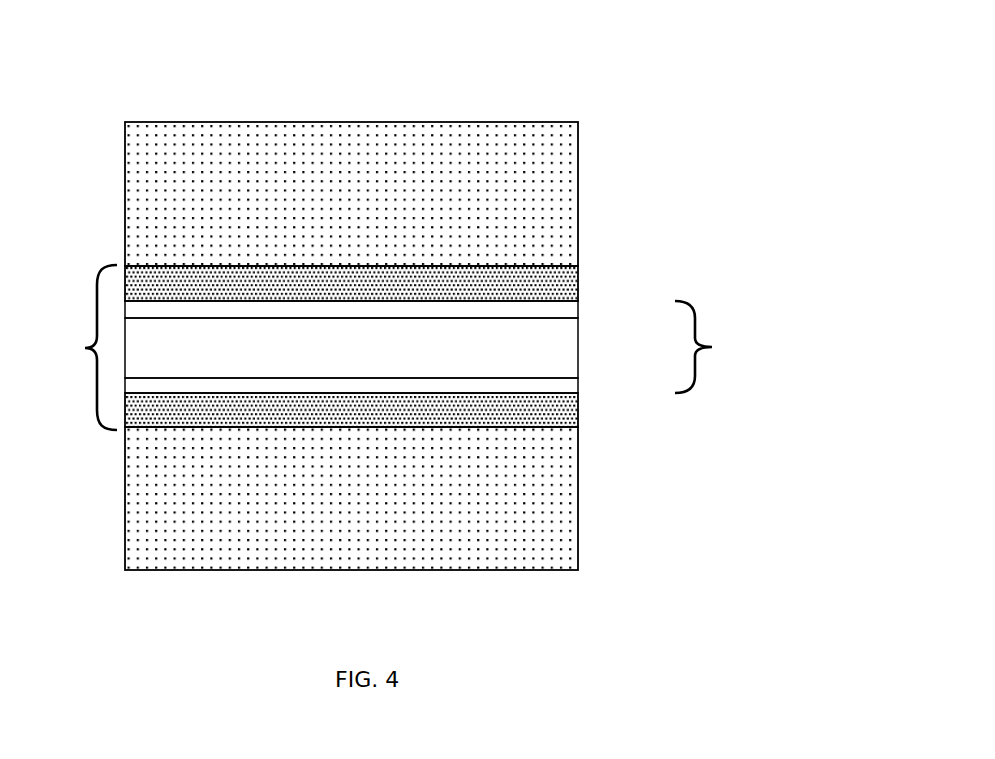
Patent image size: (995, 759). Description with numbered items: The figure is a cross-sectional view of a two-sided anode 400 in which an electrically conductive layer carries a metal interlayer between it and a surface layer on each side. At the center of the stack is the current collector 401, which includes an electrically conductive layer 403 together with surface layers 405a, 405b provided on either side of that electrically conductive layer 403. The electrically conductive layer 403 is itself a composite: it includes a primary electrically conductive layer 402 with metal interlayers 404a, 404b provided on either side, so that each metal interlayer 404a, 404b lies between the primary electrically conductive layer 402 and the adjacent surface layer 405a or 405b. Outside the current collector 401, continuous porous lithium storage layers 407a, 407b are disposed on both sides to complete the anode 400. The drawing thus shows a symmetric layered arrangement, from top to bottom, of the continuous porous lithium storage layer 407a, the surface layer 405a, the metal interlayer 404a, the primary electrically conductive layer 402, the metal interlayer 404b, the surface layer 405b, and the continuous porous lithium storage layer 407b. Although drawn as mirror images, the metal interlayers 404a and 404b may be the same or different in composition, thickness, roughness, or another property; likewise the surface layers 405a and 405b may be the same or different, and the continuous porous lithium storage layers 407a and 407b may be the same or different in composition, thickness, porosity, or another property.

The anode 400 is at (672, 55).
The current collector 401 is at (85, 348).
The primary electrically conductive layer 402 is at (553, 348).
The electrically conductive layer 403 is at (712, 347).
The metal interlayer 404a is at (557, 309).
The metal interlayer 404b is at (562, 386).
The surface layer 405a is at (557, 286).
The surface layer 405b is at (557, 413).
The continuous porous lithium storage layer 407a is at (152, 167).
The continuous porous lithium storage layer 407b is at (152, 528).